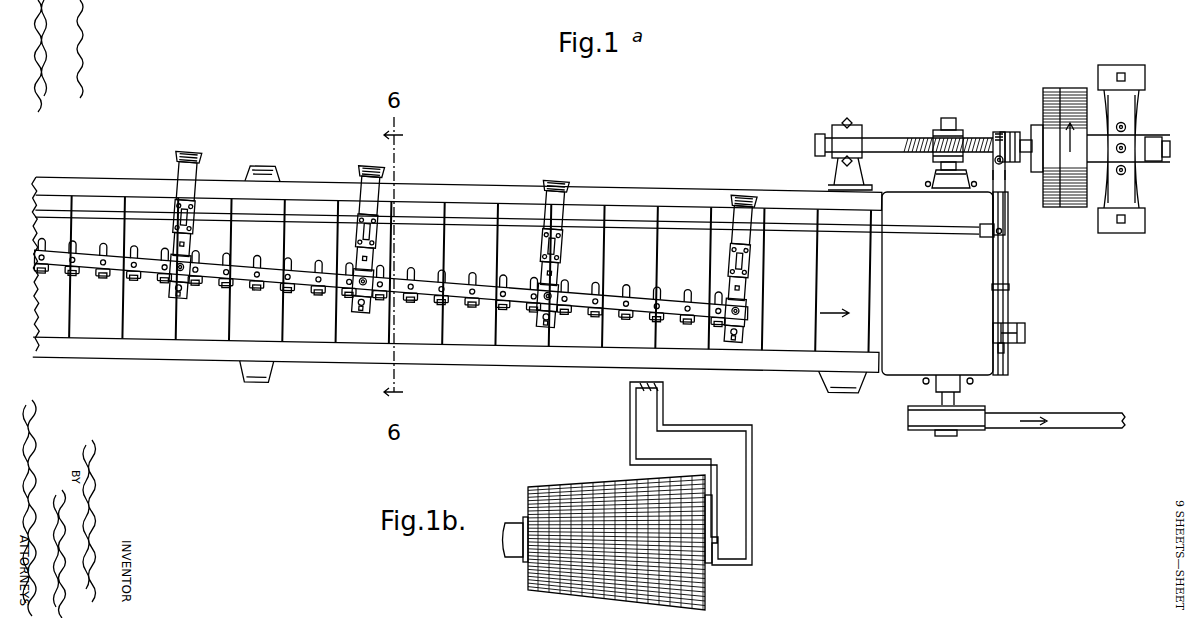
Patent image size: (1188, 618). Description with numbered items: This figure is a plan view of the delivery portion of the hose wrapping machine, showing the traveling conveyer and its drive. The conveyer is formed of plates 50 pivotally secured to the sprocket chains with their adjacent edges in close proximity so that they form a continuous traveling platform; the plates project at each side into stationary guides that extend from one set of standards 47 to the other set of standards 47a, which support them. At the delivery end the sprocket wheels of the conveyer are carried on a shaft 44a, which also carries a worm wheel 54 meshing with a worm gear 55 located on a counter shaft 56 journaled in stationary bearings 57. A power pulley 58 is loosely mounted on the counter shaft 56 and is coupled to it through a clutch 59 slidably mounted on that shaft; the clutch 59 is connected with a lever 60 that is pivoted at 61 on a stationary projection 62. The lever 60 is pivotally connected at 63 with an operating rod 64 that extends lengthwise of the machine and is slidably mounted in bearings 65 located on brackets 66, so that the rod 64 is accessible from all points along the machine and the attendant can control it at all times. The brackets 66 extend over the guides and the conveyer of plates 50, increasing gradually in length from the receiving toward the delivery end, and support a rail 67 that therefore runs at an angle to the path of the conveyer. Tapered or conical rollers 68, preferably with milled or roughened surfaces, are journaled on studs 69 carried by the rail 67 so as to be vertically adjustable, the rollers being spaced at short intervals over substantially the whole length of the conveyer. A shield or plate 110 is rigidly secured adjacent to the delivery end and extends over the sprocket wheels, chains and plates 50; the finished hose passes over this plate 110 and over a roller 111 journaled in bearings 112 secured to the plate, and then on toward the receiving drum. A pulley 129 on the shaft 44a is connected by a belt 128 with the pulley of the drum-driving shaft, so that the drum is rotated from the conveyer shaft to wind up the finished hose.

In FIG. 1A, the shaft 44a is at (946, 120).
In FIG. 1A, the standards 47 is at (268, 173).
In FIG. 1A, the standards 47a is at (833, 388).
In FIG. 1A, the plates 50 is at (457, 274).
In FIG. 1A, the worm wheel 54 is at (984, 136).
In FIG. 1A, the worm gear 55 is at (966, 130).
In FIG. 1A, the counter shaft 56 is at (889, 140).
In FIG. 1A, the stationary bearings 57 is at (1143, 139).
In FIG. 1A, the power pulley 58 is at (1060, 92).
In FIG. 1A, the clutch 59 is at (1012, 132).
In FIG. 1A, the lever 60 is at (992, 207).
In FIG. 1A, the pivot 61 is at (1004, 164).
In FIG. 1A, the stationary projection 62 is at (992, 192).
In FIG. 1A, the pivotal connection 63 is at (992, 240).
In FIG. 1A, the operating rod 64 is at (925, 232).
In FIG. 1A, the bearings 65 is at (760, 206).
In FIG. 1A, the brackets 66 is at (748, 173).
In FIG. 1A, the rail 67 is at (449, 292).
In FIG. 1A, the tapered or conical rollers 68 is at (320, 268).
In FIG. 1B, the tapered or conical rollers 68 is at (572, 497).
In FIG. 1A, the studs 69 is at (535, 283).
In FIG. 1B, the studs 69 is at (655, 403).
In FIG. 1A, the shield or plate 110 is at (945, 298).
In FIG. 1A, the roller 111 is at (1025, 333).
In FIG. 1A, the bearings 112 is at (1010, 289).
In FIG. 1A, the belt 128 is at (1060, 424).
In FIG. 1A, the pulley 129 is at (922, 432).